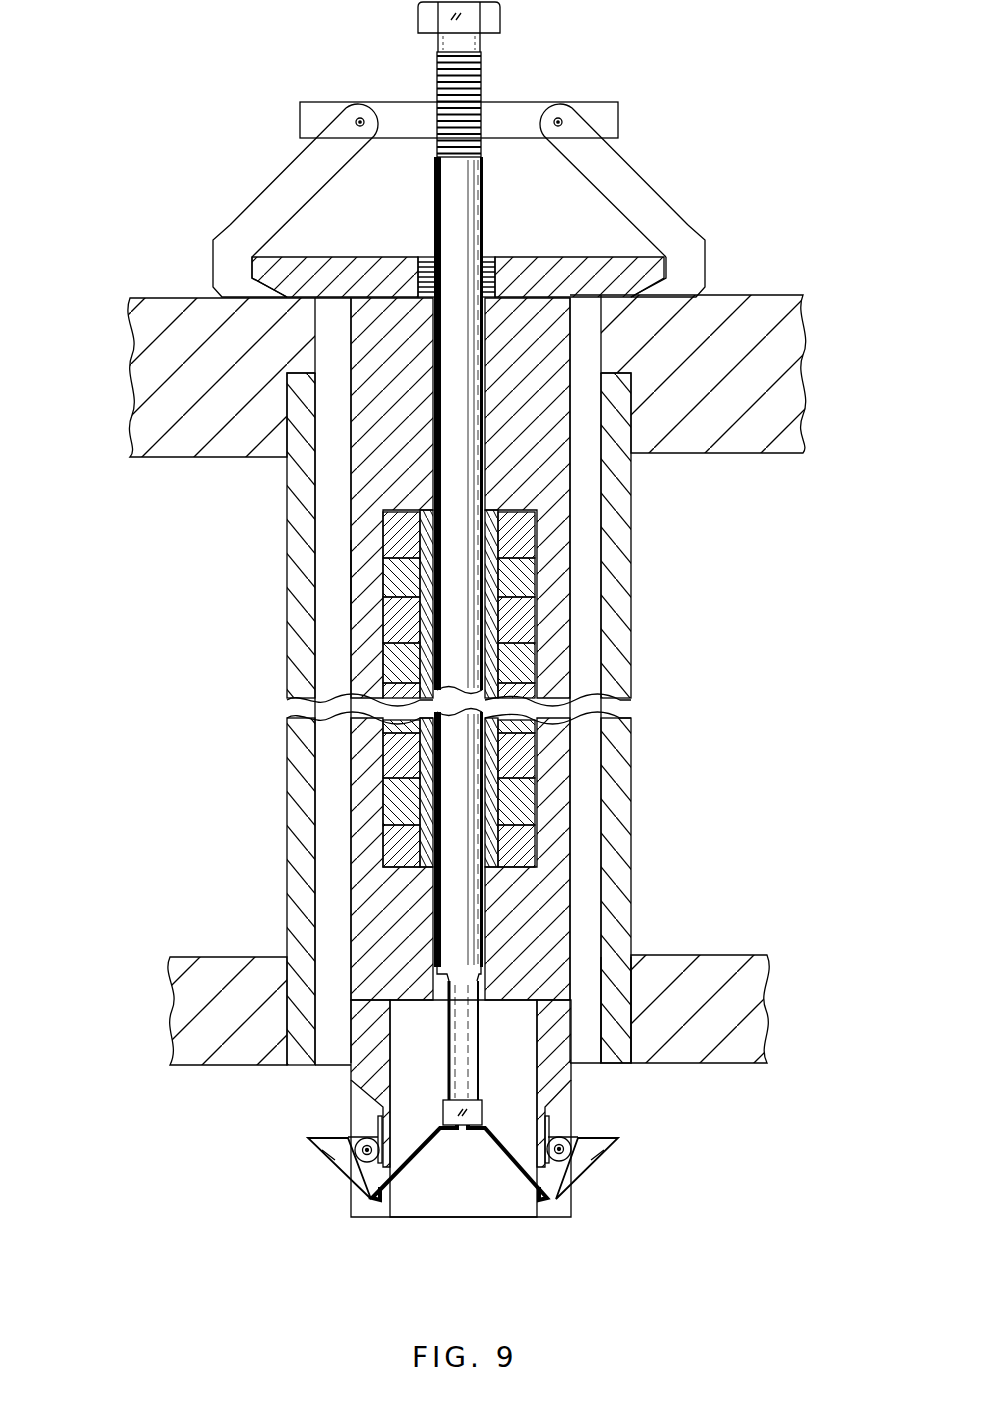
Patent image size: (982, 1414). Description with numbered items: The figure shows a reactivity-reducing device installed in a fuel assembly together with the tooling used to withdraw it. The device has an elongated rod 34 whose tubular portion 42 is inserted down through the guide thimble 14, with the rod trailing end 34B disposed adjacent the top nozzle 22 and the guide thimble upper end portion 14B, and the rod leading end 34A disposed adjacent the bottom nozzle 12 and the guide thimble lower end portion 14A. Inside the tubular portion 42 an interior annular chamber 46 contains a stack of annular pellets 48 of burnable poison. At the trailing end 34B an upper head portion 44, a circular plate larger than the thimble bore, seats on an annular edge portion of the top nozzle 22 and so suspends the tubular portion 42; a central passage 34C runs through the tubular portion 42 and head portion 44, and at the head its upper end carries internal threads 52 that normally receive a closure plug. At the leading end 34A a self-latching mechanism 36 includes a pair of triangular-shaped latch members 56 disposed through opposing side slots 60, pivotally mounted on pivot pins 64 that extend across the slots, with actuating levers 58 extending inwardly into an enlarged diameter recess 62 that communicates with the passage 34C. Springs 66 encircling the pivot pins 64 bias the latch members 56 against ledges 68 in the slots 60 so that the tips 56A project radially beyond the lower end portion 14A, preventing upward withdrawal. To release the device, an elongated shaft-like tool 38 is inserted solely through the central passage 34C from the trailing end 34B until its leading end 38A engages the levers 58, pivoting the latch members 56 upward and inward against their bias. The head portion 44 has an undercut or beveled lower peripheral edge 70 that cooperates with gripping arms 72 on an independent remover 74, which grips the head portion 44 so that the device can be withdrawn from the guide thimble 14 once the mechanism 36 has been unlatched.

The bottom nozzle 12 is at (745, 995).
The guide thimble 14 is at (634, 772).
The lower end portion of guide thimble 14A is at (635, 1025).
The upper end portion of guide thimble 14B is at (630, 423).
The top nozzle 22 is at (775, 345).
The elongated rod 34 is at (582, 742).
The leading end of rod 34A is at (573, 1048).
The trailing end of rod 34B is at (348, 414).
The central passage 34C is at (435, 985).
The self-latching mechanism 36 is at (510, 1184).
The elongated shaft-like tool 38 is at (450, 473).
The leading end of tool 38A is at (443, 1102).
The tubular portion 42 is at (351, 578).
The upper head portion 44 is at (328, 257).
The interior annular chamber 46 is at (395, 628).
The annular pellets 48 is at (540, 596).
The internal threads 52 is at (440, 268).
The latch members 56 is at (333, 1157).
The tips of latch members 56A is at (314, 1142).
The actuating levers 58 is at (483, 1135).
The side slots 60 is at (378, 1208).
The enlarged diameter recess 62 is at (532, 1205).
The pivot pins 64 is at (335, 1162).
The springs 66 is at (378, 1122).
The ledges 68 is at (357, 1160).
The beveled lower peripheral edge 70 is at (673, 287).
The gripping arms 72 is at (278, 173).
The remover 74 is at (602, 98).